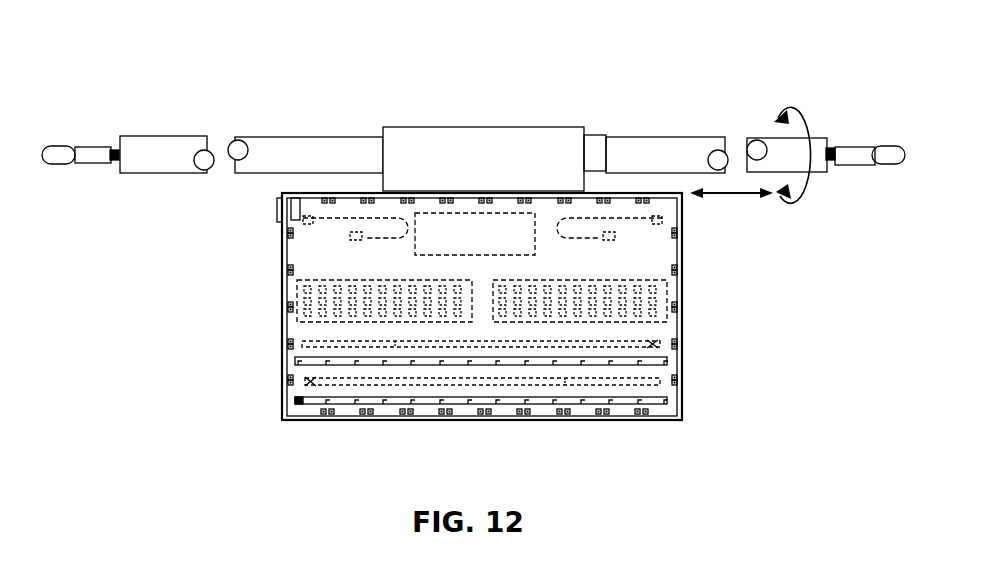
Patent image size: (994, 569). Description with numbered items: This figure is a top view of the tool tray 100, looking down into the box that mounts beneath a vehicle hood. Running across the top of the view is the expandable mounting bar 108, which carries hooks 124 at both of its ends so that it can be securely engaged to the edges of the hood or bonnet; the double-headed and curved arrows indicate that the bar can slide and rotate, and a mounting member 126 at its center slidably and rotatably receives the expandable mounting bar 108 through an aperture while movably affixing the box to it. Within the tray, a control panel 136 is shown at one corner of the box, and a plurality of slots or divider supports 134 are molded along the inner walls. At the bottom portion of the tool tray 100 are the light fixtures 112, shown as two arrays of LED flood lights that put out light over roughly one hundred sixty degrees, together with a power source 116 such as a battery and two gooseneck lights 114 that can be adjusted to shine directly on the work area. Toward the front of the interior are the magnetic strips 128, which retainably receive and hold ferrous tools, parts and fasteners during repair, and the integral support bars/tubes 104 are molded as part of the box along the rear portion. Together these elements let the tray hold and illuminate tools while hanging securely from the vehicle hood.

The tool tray 100 is at (148, 55).
The support bars/tubes 104 is at (298, 343).
The expandable mounting bar 108 is at (158, 152).
The light fixtures 112 is at (300, 297).
The gooseneck lights 114 is at (322, 215).
The power source 116 is at (470, 228).
The hooks 124 is at (62, 152).
The mounting member 126 is at (420, 150).
The magnetic strips 128 is at (298, 400).
The slots or divider supports 134 is at (290, 268).
The control panel 136 is at (280, 212).